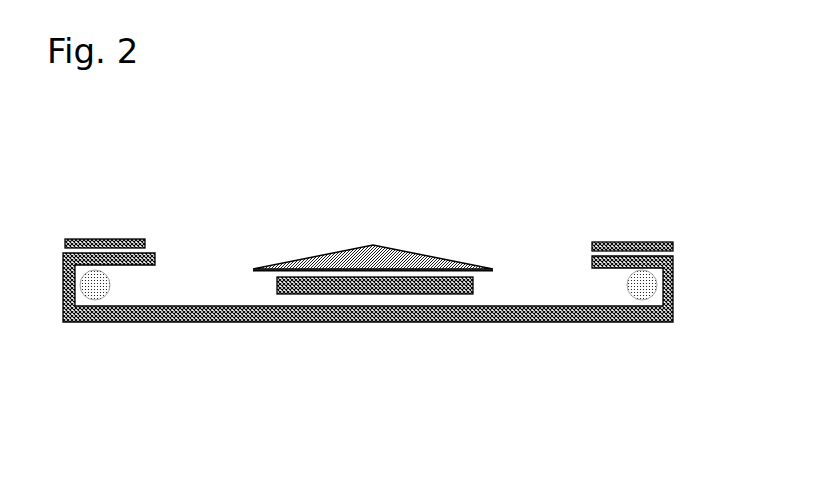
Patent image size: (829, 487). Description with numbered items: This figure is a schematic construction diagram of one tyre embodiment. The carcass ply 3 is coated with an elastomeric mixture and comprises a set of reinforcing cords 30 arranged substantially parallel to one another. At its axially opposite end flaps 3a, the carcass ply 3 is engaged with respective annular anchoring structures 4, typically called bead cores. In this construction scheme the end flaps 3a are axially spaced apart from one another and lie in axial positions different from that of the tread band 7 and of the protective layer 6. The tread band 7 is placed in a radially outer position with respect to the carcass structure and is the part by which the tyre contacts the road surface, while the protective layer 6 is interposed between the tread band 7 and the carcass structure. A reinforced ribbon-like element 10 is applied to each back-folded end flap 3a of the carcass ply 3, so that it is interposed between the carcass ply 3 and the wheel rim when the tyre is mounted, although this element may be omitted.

The carcass ply 3 is at (213, 322).
The end flap 3a is at (153, 246).
The annular anchoring structure 4 is at (95, 285).
The protective layer 6 is at (475, 284).
The tread band 7 is at (335, 253).
The reinforced ribbon-like element 10 is at (104, 240).
The reinforcing cords 30 is at (390, 322).